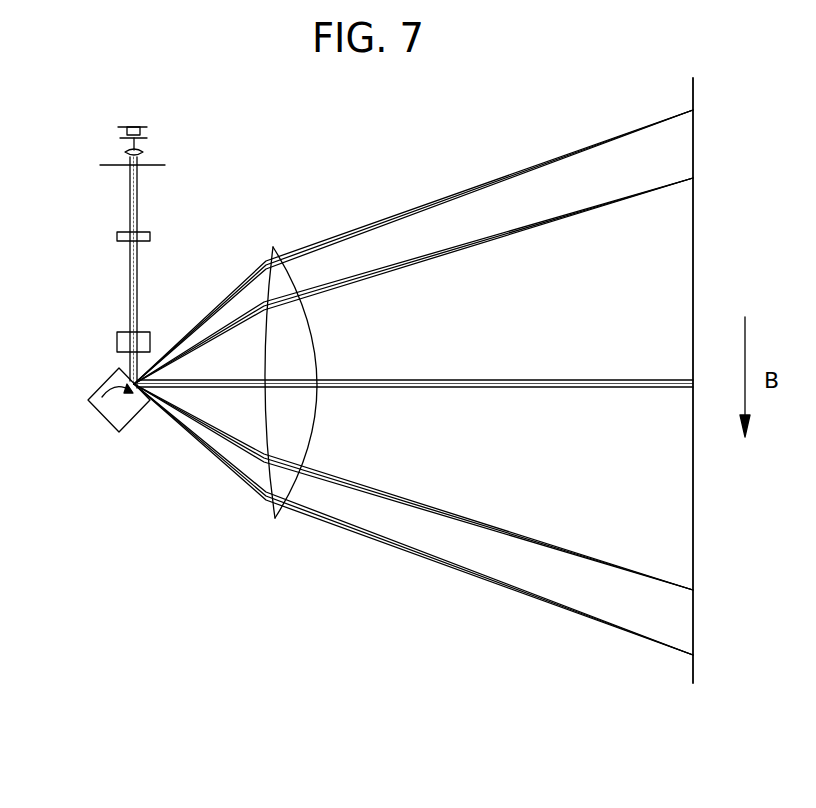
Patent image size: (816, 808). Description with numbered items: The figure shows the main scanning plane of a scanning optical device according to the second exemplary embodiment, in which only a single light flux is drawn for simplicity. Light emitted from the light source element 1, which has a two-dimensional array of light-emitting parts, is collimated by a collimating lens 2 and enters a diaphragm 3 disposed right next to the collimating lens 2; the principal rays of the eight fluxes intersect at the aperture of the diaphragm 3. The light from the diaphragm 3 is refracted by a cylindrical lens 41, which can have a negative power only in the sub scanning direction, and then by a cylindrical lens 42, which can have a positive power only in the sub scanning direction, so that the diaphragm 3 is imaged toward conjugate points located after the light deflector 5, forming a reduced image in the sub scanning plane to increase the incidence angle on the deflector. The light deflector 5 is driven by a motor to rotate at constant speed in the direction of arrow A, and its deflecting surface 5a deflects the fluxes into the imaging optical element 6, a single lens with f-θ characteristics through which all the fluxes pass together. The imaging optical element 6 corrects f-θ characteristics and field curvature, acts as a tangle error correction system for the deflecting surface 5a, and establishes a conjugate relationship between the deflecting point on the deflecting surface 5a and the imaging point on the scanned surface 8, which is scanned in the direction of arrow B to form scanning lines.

The light source element 1 is at (120, 133).
The collimating lens 2 is at (143, 151).
The diaphragm 3 is at (100, 165).
The cylindrical lens 41 is at (117, 238).
The cylindrical lens 42 is at (117, 341).
The light deflector 5 is at (90, 410).
The deflecting surface 5a is at (103, 424).
The imaging optical element 6 is at (275, 518).
The scanned surface 8 is at (694, 683).